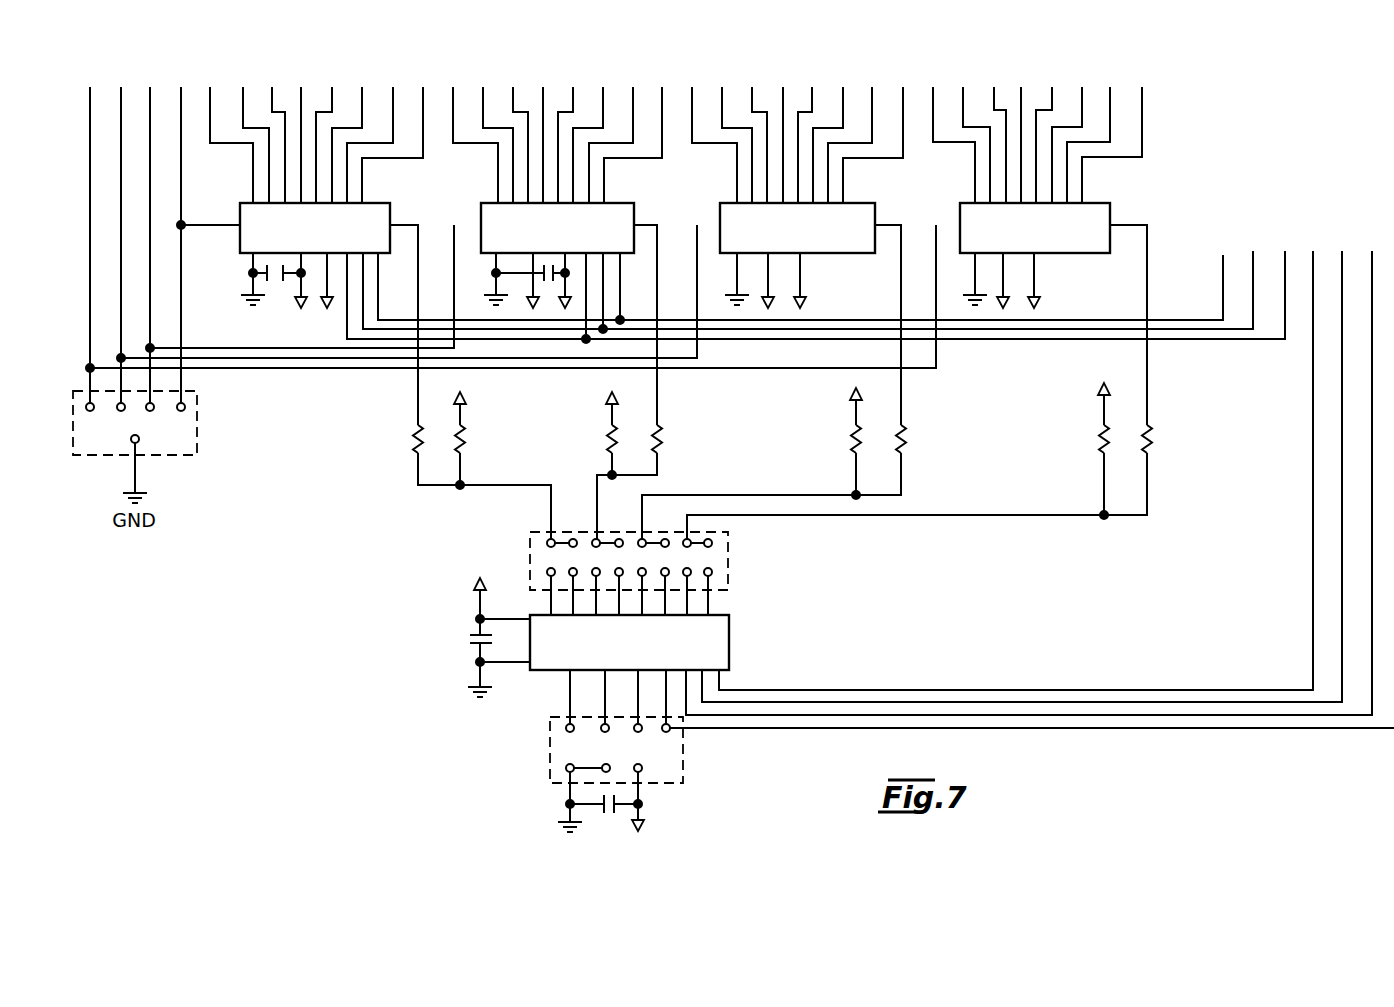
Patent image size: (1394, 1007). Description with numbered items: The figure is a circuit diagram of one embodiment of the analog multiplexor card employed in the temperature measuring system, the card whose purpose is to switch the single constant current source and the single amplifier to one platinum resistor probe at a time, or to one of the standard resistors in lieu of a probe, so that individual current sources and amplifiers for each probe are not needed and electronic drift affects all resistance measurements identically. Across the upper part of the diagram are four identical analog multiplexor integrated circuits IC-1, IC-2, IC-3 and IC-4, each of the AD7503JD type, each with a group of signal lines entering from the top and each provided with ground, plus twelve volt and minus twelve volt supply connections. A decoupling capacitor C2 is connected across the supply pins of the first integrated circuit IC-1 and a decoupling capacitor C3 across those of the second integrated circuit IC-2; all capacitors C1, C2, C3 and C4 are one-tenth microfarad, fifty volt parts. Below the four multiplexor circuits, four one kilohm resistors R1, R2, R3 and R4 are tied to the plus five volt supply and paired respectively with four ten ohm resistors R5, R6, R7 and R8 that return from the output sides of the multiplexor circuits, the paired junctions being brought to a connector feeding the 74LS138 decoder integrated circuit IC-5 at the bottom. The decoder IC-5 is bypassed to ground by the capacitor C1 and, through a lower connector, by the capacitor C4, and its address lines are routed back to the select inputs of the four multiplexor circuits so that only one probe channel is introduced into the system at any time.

The integrated circuit IC-1 is at (313, 267).
The integrated circuit IC-2 is at (544, 263).
The integrated circuit IC-3 is at (786, 255).
The integrated circuit IC-4 is at (1023, 255).
The integrated circuit IC-5 is at (951, 487).
The resistor R1 is at (474, 427).
The resistor R2 is at (600, 422).
The resistor R3 is at (844, 431).
The resistor R4 is at (1091, 438).
The resistor R5 is at (402, 439).
The resistor R6 is at (674, 439).
The resistor R7 is at (919, 439).
The resistor R8 is at (1165, 439).
The capacitor C1 is at (485, 640).
The capacitor C2 is at (264, 274).
The capacitor C3 is at (517, 271).
The capacitor C4 is at (600, 816).